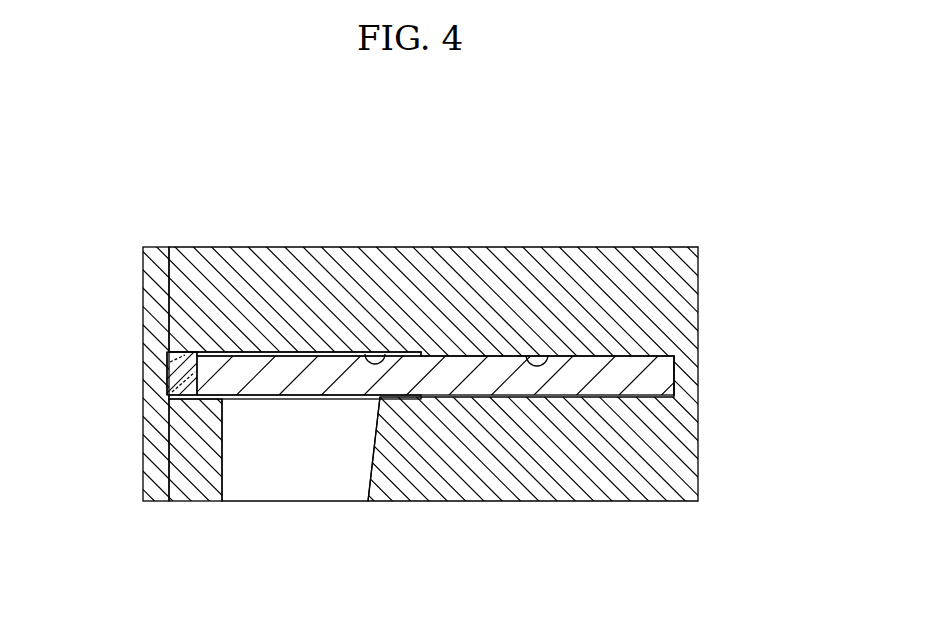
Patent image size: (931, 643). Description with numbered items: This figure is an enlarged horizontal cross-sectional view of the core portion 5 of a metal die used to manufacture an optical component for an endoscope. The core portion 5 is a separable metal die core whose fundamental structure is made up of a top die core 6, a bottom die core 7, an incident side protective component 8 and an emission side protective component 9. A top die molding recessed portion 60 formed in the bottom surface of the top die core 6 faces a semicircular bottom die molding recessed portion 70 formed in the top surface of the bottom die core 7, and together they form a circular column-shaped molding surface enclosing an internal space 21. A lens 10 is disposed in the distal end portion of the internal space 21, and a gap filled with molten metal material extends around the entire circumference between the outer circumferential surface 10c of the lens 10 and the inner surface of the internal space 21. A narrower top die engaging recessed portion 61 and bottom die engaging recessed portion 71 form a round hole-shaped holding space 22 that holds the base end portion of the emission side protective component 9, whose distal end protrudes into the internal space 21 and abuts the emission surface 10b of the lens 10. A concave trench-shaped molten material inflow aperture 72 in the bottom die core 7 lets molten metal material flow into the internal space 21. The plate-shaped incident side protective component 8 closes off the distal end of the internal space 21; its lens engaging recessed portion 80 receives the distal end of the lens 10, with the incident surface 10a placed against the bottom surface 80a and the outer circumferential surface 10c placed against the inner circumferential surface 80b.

The core portion 5 is at (652, 176).
The top die core 6 is at (465, 316).
The bottom die core 7 is at (470, 258).
The incident side protective component 8 is at (147, 435).
The emission side protective component 9 is at (400, 381).
The lens 10 is at (185, 383).
The incident surface 10a is at (168, 356).
The emission surface 10b is at (198, 372).
The outer circumferential surface 10c is at (189, 353).
The internal space 21 is at (322, 351).
The holding space 22 is at (661, 352).
The top die molding recessed portion 60 is at (411, 282).
The bottom die molding recessed portion 70 is at (386, 353).
The top die engaging recessed portion 61 is at (543, 283).
The bottom die engaging recessed portion 71 is at (525, 353).
The molten material inflow aperture 72 is at (287, 490).
The lens engaging recessed portion 80 is at (174, 352).
The bottom surface 80a is at (163, 374).
The inner circumferential surface 80b is at (170, 381).